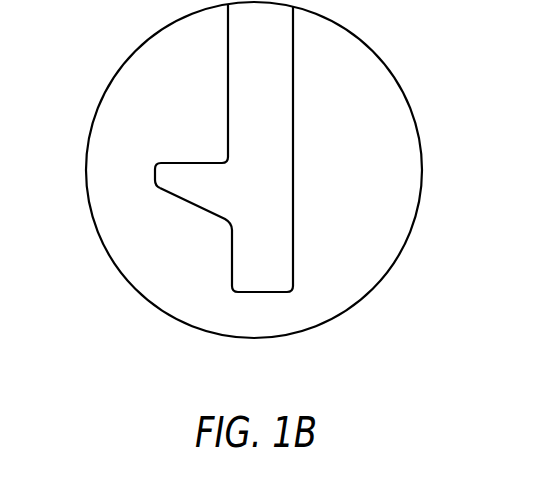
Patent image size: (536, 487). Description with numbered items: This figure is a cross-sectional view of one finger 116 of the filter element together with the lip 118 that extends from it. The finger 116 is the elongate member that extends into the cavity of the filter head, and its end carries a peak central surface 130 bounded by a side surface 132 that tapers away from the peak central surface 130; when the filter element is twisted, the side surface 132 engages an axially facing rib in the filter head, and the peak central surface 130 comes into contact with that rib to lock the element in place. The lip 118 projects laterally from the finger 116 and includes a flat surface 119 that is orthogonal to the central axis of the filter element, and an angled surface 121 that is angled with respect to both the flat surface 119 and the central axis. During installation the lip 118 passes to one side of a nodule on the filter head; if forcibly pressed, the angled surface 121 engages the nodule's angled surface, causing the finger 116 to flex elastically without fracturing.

The finger 116 is at (273, 108).
The lip 118 is at (168, 176).
The flat surface 119 is at (178, 162).
The angled surface 121 is at (196, 207).
The peak central surface 130 is at (262, 293).
The side surface 132 is at (260, 265).